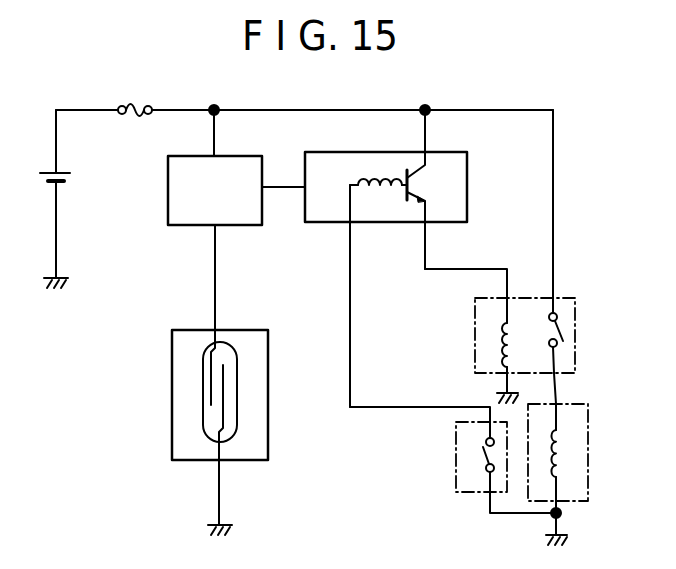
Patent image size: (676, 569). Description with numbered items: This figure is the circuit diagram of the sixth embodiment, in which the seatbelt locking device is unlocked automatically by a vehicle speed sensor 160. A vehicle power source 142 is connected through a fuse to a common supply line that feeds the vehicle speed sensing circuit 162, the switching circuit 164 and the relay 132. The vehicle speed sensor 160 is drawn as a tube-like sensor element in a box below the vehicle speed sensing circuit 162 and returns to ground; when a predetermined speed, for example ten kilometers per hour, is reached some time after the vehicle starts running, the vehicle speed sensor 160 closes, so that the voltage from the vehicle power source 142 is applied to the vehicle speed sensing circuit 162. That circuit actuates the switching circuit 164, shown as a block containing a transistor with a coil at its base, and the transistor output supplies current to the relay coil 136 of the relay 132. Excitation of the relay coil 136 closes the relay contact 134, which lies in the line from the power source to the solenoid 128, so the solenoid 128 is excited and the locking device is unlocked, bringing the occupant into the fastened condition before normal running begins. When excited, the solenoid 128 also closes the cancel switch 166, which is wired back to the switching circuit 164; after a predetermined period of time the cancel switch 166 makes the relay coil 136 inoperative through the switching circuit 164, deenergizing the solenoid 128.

The vehicle power source 142 is at (68, 177).
The vehicle speed sensing circuit 162 is at (232, 154).
The switching circuit 164 is at (348, 152).
The vehicle speed sensor 160 is at (268, 441).
The relay coil 136 is at (505, 345).
The relay contact 134 is at (562, 330).
The relay 132 is at (577, 365).
The solenoid 128 is at (563, 460).
The cancel switch 166 is at (456, 485).